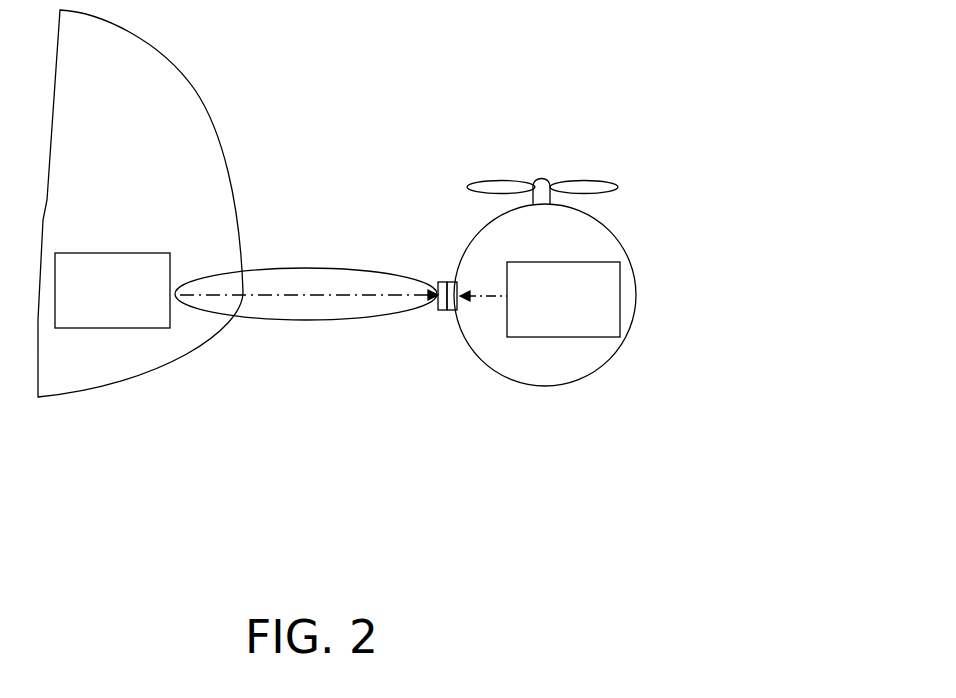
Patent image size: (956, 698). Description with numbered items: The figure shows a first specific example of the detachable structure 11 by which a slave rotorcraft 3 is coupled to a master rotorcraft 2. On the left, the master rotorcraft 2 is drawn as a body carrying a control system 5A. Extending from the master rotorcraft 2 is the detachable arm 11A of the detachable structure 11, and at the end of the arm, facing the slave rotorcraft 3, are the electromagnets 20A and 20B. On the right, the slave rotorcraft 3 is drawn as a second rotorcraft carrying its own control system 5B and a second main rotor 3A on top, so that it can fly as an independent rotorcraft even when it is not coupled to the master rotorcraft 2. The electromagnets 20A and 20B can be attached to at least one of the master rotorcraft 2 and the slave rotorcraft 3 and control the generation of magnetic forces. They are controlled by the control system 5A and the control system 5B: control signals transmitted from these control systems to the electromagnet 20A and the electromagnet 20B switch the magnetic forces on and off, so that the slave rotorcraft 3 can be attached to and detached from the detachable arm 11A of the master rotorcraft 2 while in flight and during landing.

The master rotorcraft 2 is at (193, 86).
The control system 5A is at (150, 330).
The detachable structure 11 is at (478, 155).
The detachable arm 11A is at (317, 282).
The electromagnet 20A is at (440, 282).
The electromagnet 20B is at (452, 282).
The slave rotorcraft 3 is at (540, 387).
The second main rotor 3A is at (583, 181).
The control system 5B is at (598, 338).